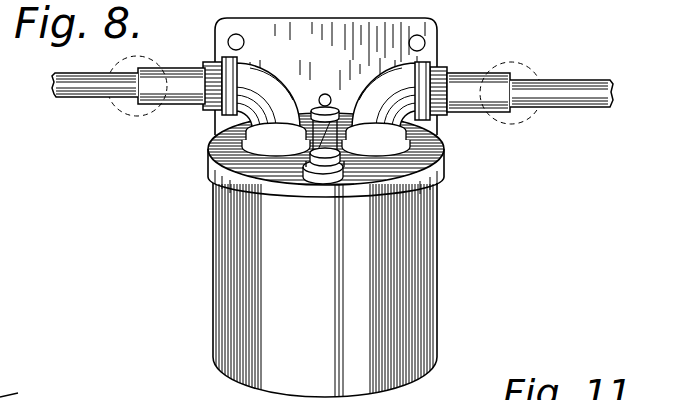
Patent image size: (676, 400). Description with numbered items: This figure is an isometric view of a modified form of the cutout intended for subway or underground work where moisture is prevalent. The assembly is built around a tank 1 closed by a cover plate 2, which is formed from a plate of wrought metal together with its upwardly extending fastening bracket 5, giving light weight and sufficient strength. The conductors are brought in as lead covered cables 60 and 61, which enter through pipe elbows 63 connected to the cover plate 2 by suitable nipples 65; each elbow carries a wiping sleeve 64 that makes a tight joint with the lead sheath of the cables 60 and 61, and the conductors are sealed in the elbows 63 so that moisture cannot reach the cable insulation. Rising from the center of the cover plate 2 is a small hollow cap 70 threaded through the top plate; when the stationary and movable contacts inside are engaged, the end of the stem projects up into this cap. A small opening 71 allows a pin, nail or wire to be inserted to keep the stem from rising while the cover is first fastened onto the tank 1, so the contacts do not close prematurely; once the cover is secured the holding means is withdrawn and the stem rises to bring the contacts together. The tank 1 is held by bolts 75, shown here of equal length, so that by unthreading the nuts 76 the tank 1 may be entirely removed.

The tank 1 is at (215, 247).
The cover plate 2 is at (443, 164).
The fastening bracket 5 is at (440, 47).
The lead covered cable 60 is at (587, 97).
The lead covered cable 61 is at (85, 88).
The pipe elbow 63 is at (212, 125).
The wiping sleeve 64 is at (168, 90).
The nipple 65 is at (210, 158).
The hollow cap 70 is at (333, 112).
The opening 71 is at (341, 154).
The bolt 75 is at (325, 96).
The nut 76 is at (307, 102).